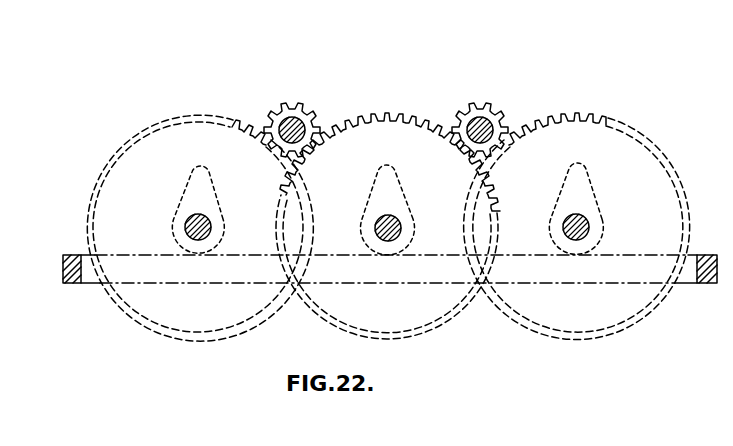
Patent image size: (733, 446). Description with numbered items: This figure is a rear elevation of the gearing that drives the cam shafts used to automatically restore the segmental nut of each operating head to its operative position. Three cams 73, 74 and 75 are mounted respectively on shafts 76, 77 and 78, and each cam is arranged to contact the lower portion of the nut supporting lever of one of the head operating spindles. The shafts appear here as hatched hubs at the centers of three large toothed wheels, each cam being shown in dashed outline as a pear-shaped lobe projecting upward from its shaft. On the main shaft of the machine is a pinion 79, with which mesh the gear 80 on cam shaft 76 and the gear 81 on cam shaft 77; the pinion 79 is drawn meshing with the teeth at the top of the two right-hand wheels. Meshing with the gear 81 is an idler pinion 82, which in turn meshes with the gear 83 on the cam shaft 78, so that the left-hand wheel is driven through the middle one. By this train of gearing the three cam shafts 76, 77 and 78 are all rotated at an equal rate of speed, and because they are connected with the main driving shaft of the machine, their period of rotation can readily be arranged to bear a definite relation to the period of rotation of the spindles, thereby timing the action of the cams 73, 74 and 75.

The cam 73 is at (578, 170).
The cam 74 is at (392, 178).
The cam 75 is at (186, 180).
The shaft 76 is at (582, 240).
The shaft 77 is at (383, 241).
The shaft 78 is at (195, 240).
The pinion 79 is at (482, 110).
The gear 80 is at (570, 333).
The gear 81 is at (452, 322).
The idler pinion 82 is at (307, 115).
The gear 83 is at (105, 168).